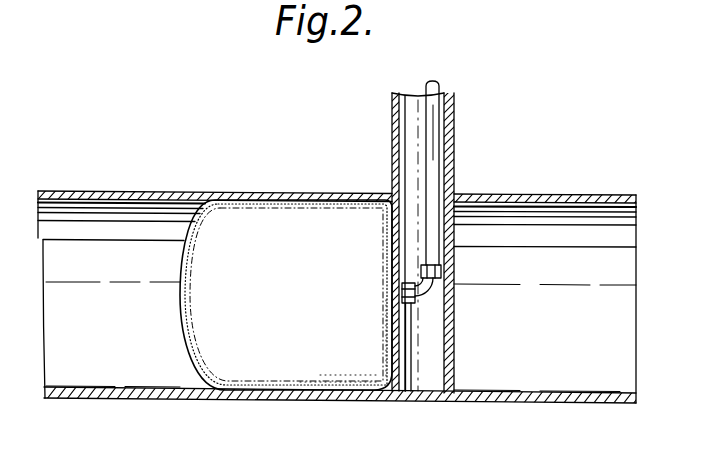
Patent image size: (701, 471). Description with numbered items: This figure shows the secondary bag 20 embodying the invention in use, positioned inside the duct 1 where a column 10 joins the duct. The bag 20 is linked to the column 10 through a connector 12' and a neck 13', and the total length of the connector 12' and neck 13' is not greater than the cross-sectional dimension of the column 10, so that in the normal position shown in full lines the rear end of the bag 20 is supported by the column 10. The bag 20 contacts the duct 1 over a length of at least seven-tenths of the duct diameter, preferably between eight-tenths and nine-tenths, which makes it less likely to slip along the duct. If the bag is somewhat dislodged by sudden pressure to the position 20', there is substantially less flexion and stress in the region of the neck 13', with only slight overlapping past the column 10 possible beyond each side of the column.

The pipe 1 is at (143, 193).
The column 10 is at (455, 150).
The bag 20 is at (286, 264).
The dislodged position of the bag 20' is at (366, 267).
The connector 12' is at (458, 301).
The neck 13' is at (425, 378).